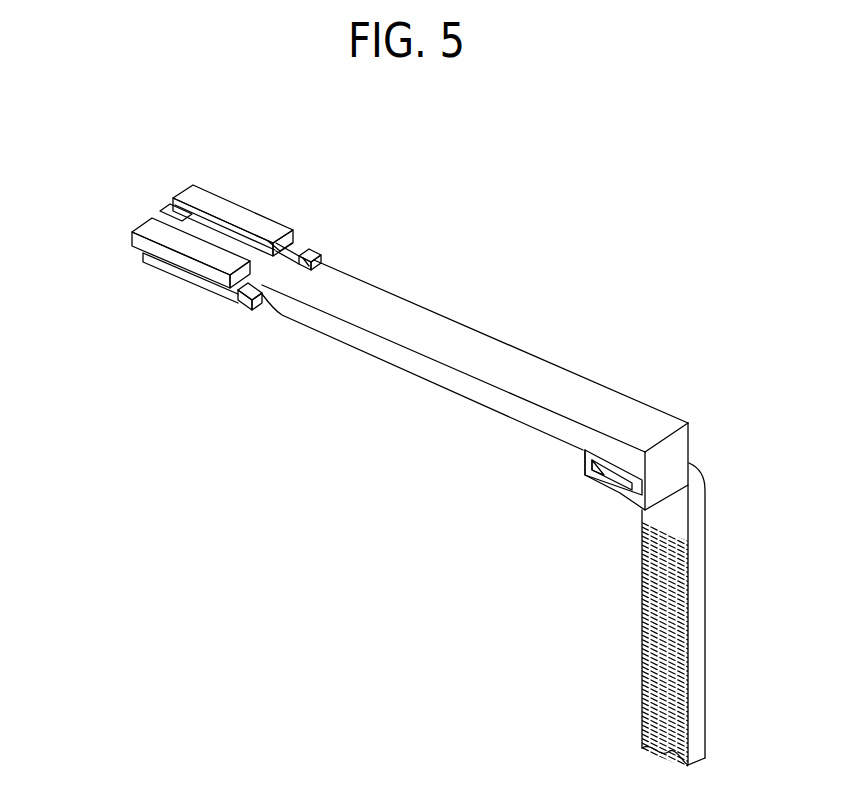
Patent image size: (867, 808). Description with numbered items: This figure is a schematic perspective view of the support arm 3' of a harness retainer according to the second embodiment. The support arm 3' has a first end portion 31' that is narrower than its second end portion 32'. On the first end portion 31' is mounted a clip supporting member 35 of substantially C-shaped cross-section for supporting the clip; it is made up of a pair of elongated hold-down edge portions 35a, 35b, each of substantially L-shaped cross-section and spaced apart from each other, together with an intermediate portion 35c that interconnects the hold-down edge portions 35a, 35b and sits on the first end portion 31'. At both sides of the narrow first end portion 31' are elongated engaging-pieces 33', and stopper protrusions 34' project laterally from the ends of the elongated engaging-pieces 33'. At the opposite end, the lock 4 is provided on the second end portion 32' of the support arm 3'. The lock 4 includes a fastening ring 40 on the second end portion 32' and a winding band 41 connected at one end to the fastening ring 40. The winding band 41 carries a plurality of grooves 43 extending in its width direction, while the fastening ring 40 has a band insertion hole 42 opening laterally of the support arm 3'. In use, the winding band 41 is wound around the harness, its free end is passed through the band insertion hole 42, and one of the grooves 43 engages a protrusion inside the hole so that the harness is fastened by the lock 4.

The support arm 3' is at (475, 343).
The lock 4 is at (492, 498).
The first end portion 31' is at (300, 198).
The second end portion 32' is at (649, 398).
The elongated engaging-pieces 33' is at (253, 294).
The stopper protrusions 34' is at (325, 304).
The clip supporting member 35 is at (183, 192).
The elongated hold-down edge portion 35a is at (182, 235).
The elongated hold-down edge portion 35b is at (212, 202).
The intermediate portion 35c is at (163, 207).
The fastening ring 40 is at (617, 490).
The winding band 41 is at (698, 525).
The band insertion hole 42 is at (590, 483).
The grooves 43 is at (642, 627).